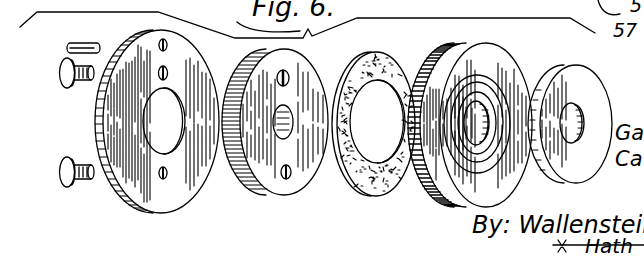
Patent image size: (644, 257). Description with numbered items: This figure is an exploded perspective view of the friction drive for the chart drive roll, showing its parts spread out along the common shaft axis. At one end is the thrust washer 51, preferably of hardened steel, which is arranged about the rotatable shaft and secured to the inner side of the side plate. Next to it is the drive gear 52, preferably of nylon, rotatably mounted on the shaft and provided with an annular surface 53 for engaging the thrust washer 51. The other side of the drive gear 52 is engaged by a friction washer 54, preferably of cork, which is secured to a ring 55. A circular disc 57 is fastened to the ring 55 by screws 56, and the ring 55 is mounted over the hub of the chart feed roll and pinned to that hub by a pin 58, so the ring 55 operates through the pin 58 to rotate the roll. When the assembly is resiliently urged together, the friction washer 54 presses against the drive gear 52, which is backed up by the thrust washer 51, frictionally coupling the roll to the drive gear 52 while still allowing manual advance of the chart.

The thrust washer 51 is at (582, 78).
The drive gear 52 is at (510, 77).
The annular surface 53 is at (465, 162).
The friction washer 54 is at (367, 187).
The ring 55 is at (317, 68).
The screws 56 is at (61, 76).
The circular disc 57 is at (127, 198).
The pin 58 is at (74, 44).